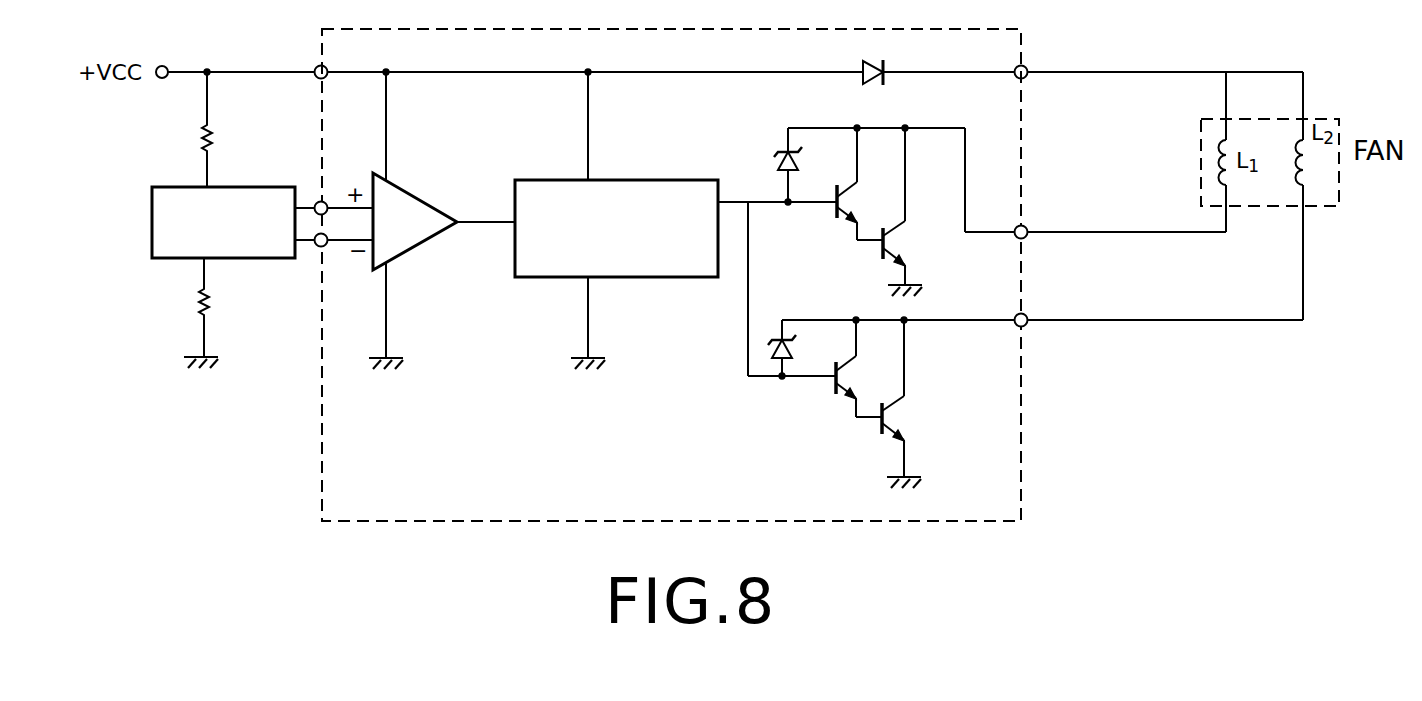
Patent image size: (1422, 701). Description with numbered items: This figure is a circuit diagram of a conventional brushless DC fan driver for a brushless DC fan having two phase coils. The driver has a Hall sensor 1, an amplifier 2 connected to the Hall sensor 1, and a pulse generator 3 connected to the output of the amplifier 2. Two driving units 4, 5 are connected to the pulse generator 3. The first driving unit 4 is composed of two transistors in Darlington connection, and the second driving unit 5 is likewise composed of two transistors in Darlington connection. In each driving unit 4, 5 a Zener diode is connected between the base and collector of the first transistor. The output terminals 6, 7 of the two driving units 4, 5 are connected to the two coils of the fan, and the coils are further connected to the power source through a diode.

The Hall sensor 1 is at (245, 258).
The amplifier 2 is at (417, 247).
The pulse generator 3 is at (650, 277).
The first driving unit 4 is at (828, 228).
The second driving unit 5 is at (836, 418).
The output terminal 6 is at (1026, 225).
The output terminal 7 is at (1026, 314).